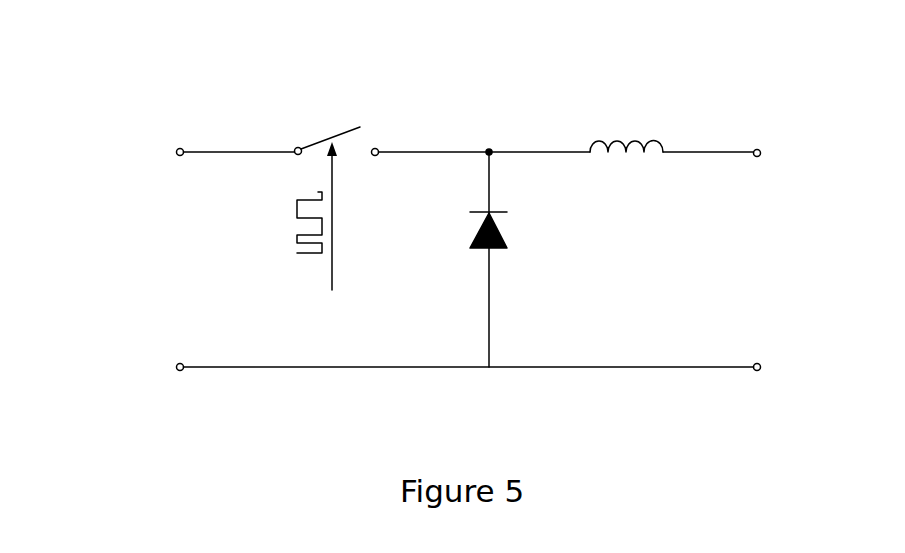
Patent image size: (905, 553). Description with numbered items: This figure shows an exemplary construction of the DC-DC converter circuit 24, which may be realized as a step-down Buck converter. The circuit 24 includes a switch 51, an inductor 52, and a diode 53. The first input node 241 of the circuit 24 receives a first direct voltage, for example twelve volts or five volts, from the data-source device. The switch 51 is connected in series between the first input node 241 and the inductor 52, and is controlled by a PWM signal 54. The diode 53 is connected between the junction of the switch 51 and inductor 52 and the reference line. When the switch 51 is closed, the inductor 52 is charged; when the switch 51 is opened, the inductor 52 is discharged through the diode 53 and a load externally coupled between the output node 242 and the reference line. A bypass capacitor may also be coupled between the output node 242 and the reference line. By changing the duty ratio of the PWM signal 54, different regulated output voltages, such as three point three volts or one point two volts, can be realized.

The DC-DC converter circuit 24 is at (140, 102).
The first input node 241 is at (182, 148).
The output node 242 is at (758, 150).
The switch 51 is at (356, 123).
The inductor 52 is at (598, 138).
The diode 53 is at (502, 255).
The PWM signal 54 is at (295, 215).